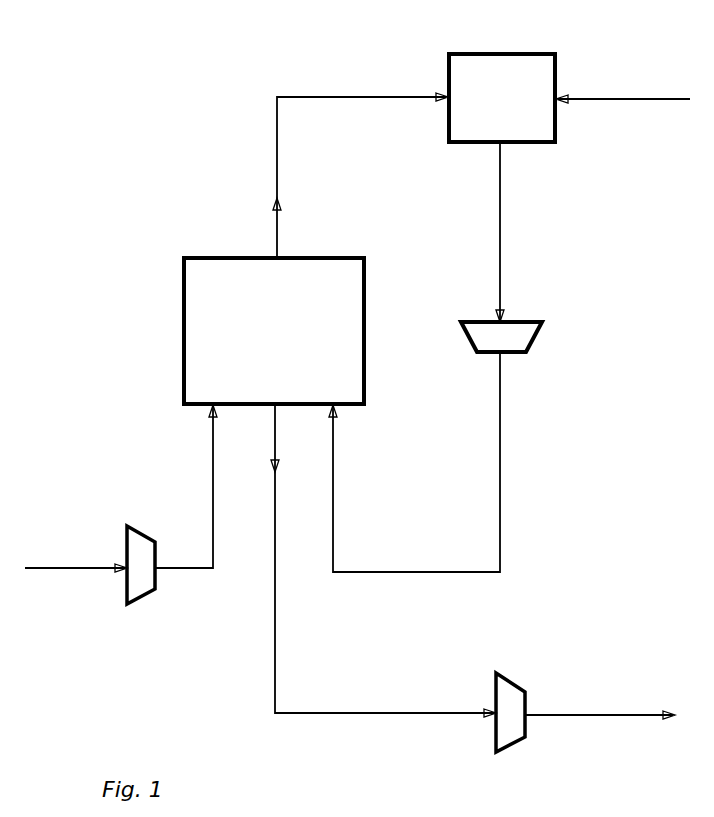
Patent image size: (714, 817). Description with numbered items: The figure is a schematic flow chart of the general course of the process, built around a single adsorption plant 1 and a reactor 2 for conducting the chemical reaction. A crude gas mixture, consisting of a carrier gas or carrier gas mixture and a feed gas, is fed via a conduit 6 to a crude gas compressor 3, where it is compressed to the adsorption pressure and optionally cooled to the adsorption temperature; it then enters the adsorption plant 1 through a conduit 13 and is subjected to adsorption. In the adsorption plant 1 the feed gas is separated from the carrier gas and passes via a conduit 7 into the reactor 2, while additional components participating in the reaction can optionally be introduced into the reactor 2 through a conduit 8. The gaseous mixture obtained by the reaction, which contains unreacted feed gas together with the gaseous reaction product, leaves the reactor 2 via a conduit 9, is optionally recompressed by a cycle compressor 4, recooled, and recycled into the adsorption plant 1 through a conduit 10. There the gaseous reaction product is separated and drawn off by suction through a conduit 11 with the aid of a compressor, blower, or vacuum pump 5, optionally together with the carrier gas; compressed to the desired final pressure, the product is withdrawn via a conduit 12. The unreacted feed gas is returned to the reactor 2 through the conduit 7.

The adsorption plant 1 is at (183, 328).
The reactor 2 is at (470, 53).
The crude gas compressor 3 is at (143, 595).
The cycle compressor 4 is at (530, 340).
The compressor, blower, or vacuum pump 5 is at (510, 673).
The conduit 6 is at (73, 568).
The conduit 7 is at (358, 97).
The conduit 8 is at (635, 99).
The conduit 9 is at (500, 226).
The conduit 10 is at (335, 470).
The conduit 11 is at (275, 660).
The conduit 12 is at (600, 696).
The conduit 13 is at (213, 473).